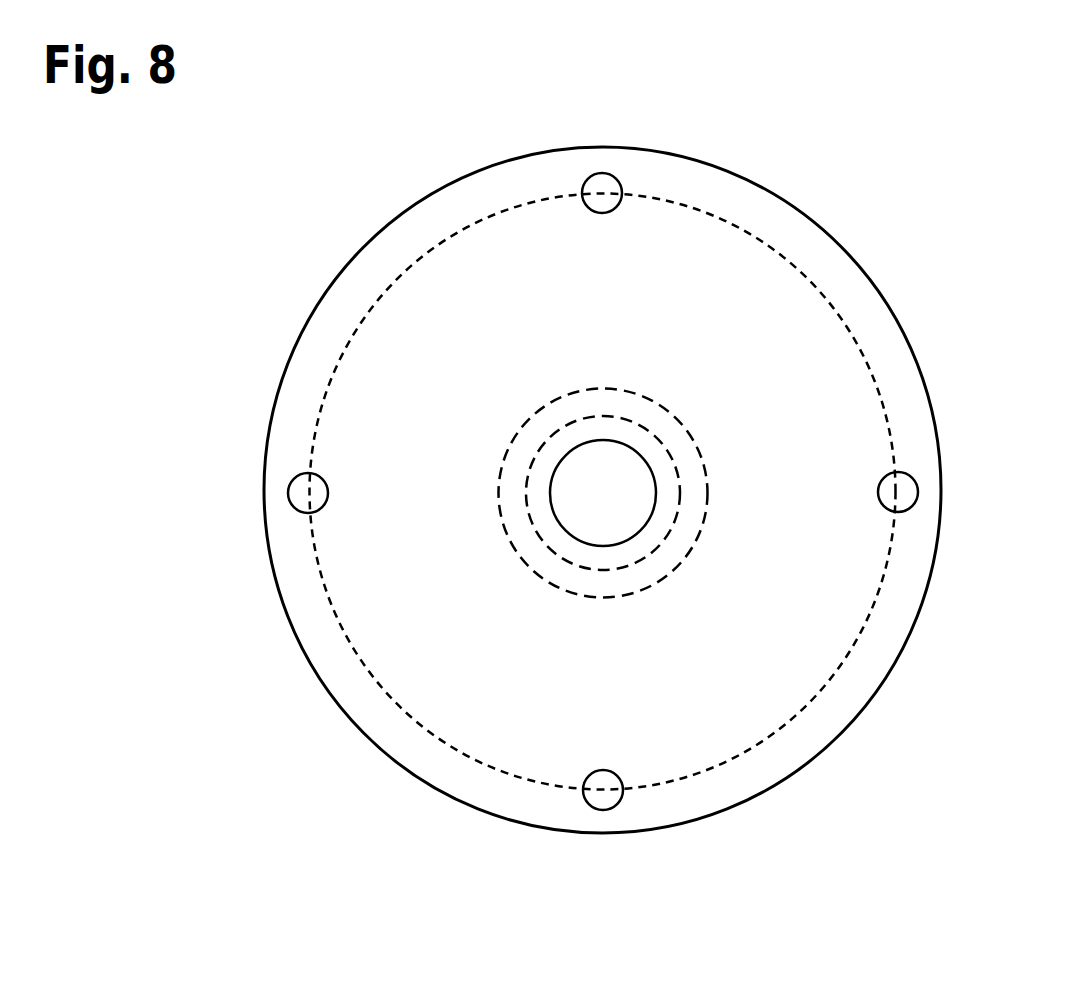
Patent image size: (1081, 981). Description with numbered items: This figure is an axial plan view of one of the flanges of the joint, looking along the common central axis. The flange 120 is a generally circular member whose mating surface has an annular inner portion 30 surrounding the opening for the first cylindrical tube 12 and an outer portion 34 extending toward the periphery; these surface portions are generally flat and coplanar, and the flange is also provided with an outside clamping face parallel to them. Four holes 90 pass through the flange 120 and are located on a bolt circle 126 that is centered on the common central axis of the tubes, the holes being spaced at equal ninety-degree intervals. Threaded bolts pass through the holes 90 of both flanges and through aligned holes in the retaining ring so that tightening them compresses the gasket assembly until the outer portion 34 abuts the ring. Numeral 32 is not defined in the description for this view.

The flange 120 is at (330, 219).
The plate 32 is at (569, 490).
The outer portion 34 is at (483, 267).
The bolt circle 126 is at (763, 243).
The holes 90 is at (617, 180).
The inner portion 30 is at (642, 445).
The first cylindrical tube 12 is at (515, 467).